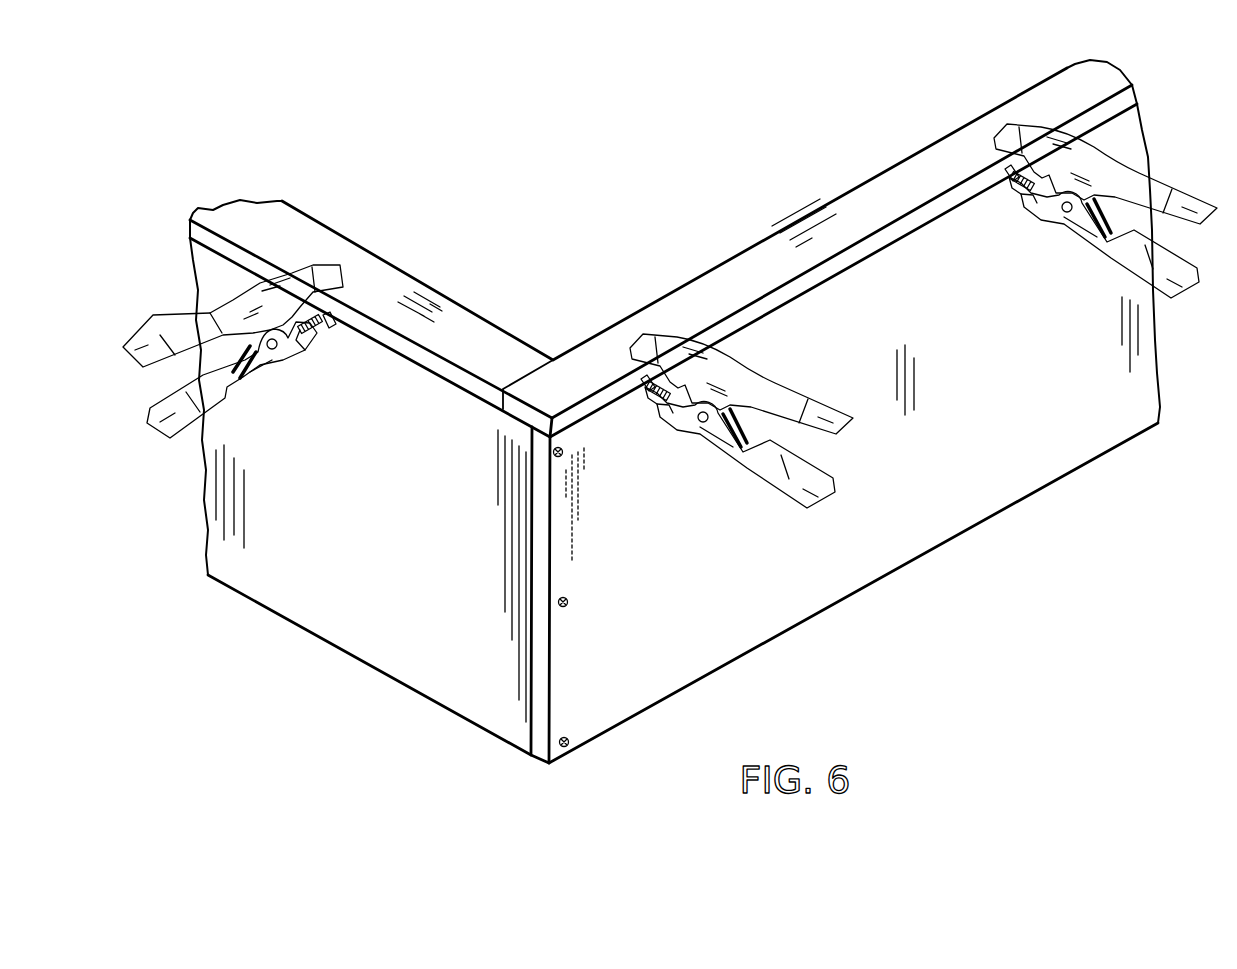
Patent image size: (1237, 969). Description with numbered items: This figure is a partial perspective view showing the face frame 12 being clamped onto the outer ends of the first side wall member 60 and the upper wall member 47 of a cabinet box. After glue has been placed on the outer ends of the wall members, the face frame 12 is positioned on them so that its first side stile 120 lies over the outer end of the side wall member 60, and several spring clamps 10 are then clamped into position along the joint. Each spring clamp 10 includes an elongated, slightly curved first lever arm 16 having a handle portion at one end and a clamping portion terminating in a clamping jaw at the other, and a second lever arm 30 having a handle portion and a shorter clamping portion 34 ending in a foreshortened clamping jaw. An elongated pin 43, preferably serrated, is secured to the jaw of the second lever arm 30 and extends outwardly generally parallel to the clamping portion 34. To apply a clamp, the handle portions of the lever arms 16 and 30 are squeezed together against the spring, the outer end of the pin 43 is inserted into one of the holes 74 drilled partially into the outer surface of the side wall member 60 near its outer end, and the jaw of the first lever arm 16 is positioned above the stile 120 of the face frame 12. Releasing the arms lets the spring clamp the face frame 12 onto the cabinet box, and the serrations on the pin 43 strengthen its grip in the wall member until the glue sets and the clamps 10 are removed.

The spring clamp 10 is at (280, 384).
The face frame 12 is at (803, 192).
The first lever arm 16 is at (279, 270).
The second lever arm 30 is at (306, 366).
The clamping portion 34 is at (666, 428).
The pin 43 is at (326, 339).
The upper wall member 47 is at (378, 672).
The first side wall member 60 is at (405, 303).
The holes 74 is at (640, 392).
The first side stile 120 is at (765, 258).